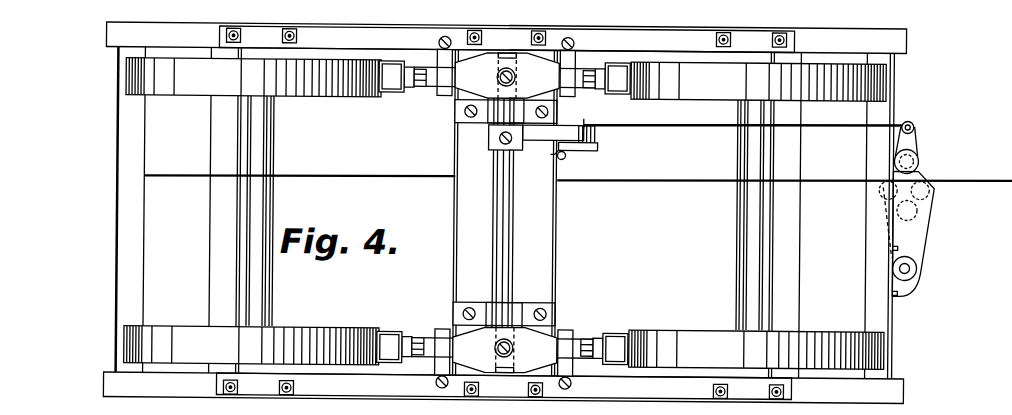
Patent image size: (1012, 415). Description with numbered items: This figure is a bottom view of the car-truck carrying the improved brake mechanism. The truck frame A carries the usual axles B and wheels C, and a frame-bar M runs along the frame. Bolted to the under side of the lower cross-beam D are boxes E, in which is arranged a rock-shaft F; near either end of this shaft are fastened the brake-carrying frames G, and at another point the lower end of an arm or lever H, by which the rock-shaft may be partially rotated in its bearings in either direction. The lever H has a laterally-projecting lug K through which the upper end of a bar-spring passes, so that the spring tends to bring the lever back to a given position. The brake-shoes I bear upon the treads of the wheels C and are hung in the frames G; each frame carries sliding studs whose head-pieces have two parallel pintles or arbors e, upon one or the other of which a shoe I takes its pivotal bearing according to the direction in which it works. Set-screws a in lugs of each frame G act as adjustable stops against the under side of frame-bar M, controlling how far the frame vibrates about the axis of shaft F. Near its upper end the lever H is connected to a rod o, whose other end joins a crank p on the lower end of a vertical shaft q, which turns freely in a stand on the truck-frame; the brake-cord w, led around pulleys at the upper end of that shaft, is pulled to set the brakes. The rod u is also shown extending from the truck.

The frame of car-truck A is at (517, 203).
The frame-bar M is at (505, 212).
The set-screws a is at (511, 209).
The axles B is at (505, 213).
The wheels C is at (505, 214).
The brake-shoes I is at (504, 213).
The pintles or arbors e is at (504, 212).
The brake-carrying frames G is at (506, 213).
The boxes E is at (505, 213).
The lower cross-beam D is at (545, 213).
The rock-shaft F is at (503, 213).
The arm or lever H is at (536, 137).
The laterally-projecting lug K is at (582, 142).
The cord w is at (299, 166).
The rod o is at (745, 119).
The rod u is at (784, 173).
The crank p is at (911, 147).
The vertical shaft q is at (917, 150).